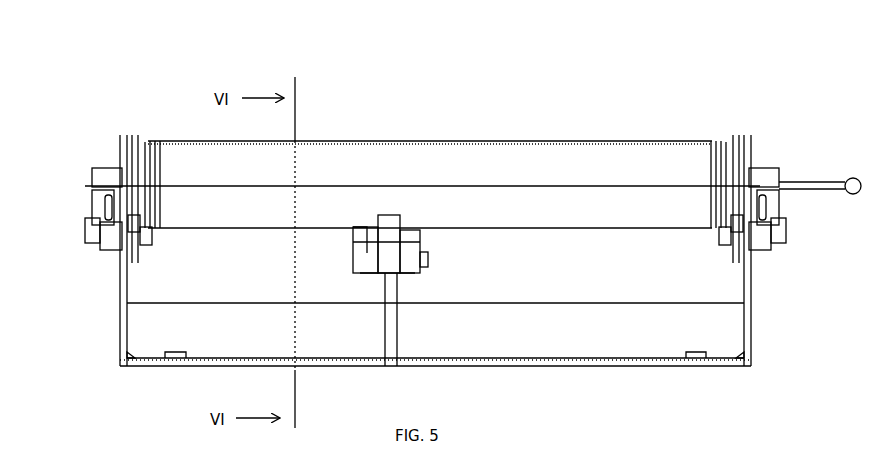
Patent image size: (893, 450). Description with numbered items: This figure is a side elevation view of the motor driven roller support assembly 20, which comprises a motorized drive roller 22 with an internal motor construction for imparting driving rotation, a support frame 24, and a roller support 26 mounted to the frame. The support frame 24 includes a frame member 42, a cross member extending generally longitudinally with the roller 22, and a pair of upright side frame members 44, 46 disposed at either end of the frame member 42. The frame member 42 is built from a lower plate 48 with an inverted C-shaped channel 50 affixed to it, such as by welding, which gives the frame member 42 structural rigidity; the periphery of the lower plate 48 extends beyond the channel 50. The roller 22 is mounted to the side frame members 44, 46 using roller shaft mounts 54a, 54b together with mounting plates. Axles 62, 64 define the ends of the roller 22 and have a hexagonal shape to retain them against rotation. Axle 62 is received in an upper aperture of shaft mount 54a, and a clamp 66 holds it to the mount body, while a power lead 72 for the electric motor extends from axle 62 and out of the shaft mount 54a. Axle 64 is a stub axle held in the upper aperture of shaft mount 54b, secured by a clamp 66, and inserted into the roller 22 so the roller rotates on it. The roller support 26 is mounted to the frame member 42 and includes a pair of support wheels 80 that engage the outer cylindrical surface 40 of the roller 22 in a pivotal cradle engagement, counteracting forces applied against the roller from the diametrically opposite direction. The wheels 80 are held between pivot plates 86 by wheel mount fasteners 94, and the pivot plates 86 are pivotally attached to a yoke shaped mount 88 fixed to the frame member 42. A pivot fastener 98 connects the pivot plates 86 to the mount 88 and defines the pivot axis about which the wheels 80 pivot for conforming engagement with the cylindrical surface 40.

The motor driven roller support assembly 20 is at (503, 72).
The motorized drive roller 22 is at (623, 120).
The support frame 24 is at (622, 388).
The roller support 26 is at (330, 265).
The outer cylindrical surface 40 is at (427, 153).
The frame member 42 is at (522, 323).
The side frame member 44 is at (750, 291).
The side frame member 46 is at (120, 295).
The lower plate 48 is at (135, 366).
The inverted C-shaped channel 50 is at (625, 318).
The roller shaft mount 54a is at (769, 168).
The roller shaft mount 54b is at (96, 172).
The axle 62 is at (734, 174).
The axle 64 is at (137, 175).
The clamp 66 is at (103, 200).
The power lead 72 is at (826, 190).
The support wheel 80 is at (390, 233).
The pivot plate 86 is at (372, 275).
The yoke shaped mount 88 is at (388, 338).
The wheel mount fastener 94 is at (353, 242).
The pivot fastener 98 is at (428, 257).